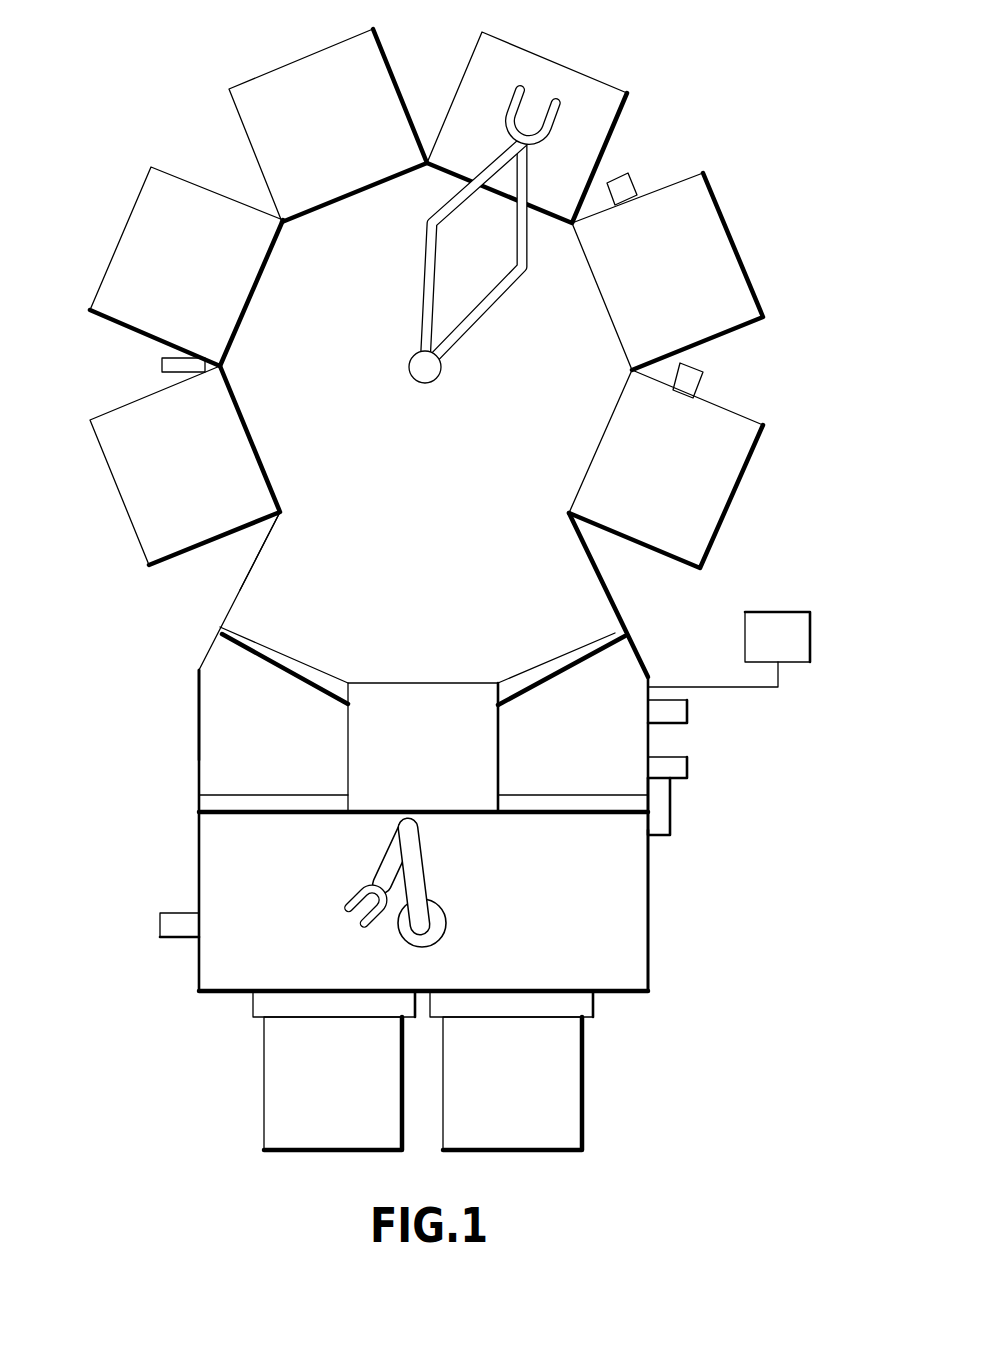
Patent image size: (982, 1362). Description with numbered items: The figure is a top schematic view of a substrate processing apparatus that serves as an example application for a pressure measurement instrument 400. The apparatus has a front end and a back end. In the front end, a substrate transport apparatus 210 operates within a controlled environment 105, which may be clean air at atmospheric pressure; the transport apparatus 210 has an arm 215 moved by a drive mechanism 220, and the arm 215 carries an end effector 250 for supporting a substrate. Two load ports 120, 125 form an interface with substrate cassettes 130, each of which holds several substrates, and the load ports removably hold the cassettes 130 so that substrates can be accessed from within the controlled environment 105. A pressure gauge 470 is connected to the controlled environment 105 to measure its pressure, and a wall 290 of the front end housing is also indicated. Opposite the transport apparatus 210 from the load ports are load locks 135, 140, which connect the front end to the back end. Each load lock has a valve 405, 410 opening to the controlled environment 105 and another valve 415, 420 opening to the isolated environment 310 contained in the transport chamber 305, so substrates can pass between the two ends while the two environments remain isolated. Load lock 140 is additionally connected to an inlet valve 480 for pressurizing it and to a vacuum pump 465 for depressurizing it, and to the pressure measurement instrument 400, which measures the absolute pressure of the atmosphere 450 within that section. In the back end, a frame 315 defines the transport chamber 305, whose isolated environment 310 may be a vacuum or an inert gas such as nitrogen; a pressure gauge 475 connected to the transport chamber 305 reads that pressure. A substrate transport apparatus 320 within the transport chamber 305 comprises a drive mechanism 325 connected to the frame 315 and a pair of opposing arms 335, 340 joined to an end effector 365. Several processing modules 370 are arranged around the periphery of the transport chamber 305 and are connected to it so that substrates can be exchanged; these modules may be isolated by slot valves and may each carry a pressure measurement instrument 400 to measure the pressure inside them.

The controlled environment 105 is at (423, 910).
The load port 120 is at (291, 1016).
The load port 125 is at (555, 1015).
The substrate cassette 130 is at (412, 1092).
The load lock 135 is at (158, 715).
The load lock 140 is at (711, 761).
The substrate transport apparatus 210 is at (391, 892).
The arm 215 is at (438, 875).
The drive mechanism 220 is at (459, 929).
The end effector 250 is at (325, 895).
The factory interface wall 290 is at (688, 910).
The transport chamber 305 is at (576, 718).
The isolated environment 310 is at (265, 716).
The frame 315 is at (222, 551).
The substrate transport apparatus 320 is at (480, 228).
The drive mechanism 325 is at (451, 387).
The arm 335 is at (433, 254).
The arm 340 is at (502, 254).
The end effector 365 is at (563, 88).
The processing module 370 is at (434, 296).
The pressure measurement instrument 400 is at (695, 485).
The valve 405 is at (384, 813).
The valve 410 is at (427, 747).
The valve 415 is at (243, 653).
The valve 420 is at (599, 651).
The atmosphere 450 is at (573, 756).
The vacuum pump 465 is at (750, 631).
The pressure gauge 470 is at (145, 908).
The pressure gauge 475 is at (140, 355).
The inlet valve 480 is at (712, 719).